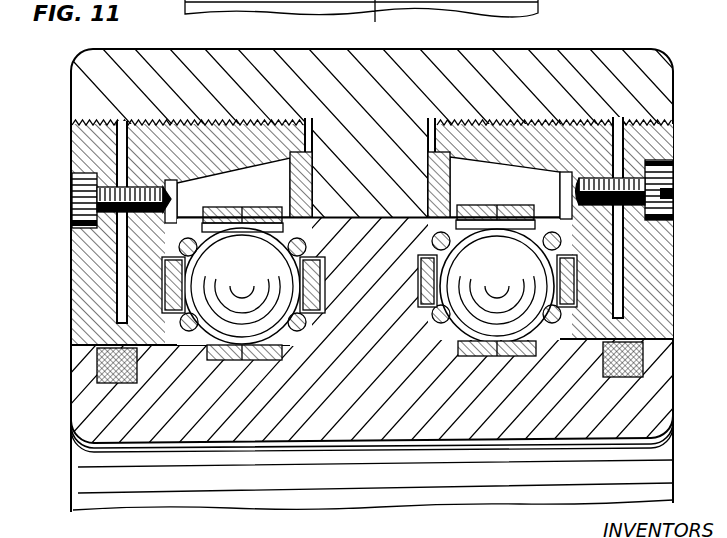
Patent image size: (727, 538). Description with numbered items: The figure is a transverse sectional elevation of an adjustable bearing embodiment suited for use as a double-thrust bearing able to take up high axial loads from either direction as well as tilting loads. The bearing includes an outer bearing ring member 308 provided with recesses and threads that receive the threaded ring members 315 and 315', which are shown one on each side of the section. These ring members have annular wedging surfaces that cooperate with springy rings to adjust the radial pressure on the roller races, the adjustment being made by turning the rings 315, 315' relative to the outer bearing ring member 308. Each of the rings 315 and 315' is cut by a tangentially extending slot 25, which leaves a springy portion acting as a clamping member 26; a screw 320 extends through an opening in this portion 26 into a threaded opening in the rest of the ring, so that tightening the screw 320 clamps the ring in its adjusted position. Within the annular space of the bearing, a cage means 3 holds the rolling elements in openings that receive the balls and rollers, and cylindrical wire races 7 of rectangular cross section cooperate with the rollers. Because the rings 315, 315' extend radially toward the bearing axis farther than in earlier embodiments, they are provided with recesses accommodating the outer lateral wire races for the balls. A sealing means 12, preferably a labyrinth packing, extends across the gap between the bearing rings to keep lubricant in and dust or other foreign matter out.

The outer bearing ring member 308 is at (590, 57).
The tangentially extending slot 25 is at (118, 126).
The clamping member 26 is at (80, 138).
The threaded ring member 315' is at (238, 151).
The threaded ring member 315 is at (500, 148).
The screw 320 is at (72, 185).
The cage means 3 is at (318, 295).
The cylindrical wire race 7 is at (256, 362).
The sealing means 12 is at (97, 353).